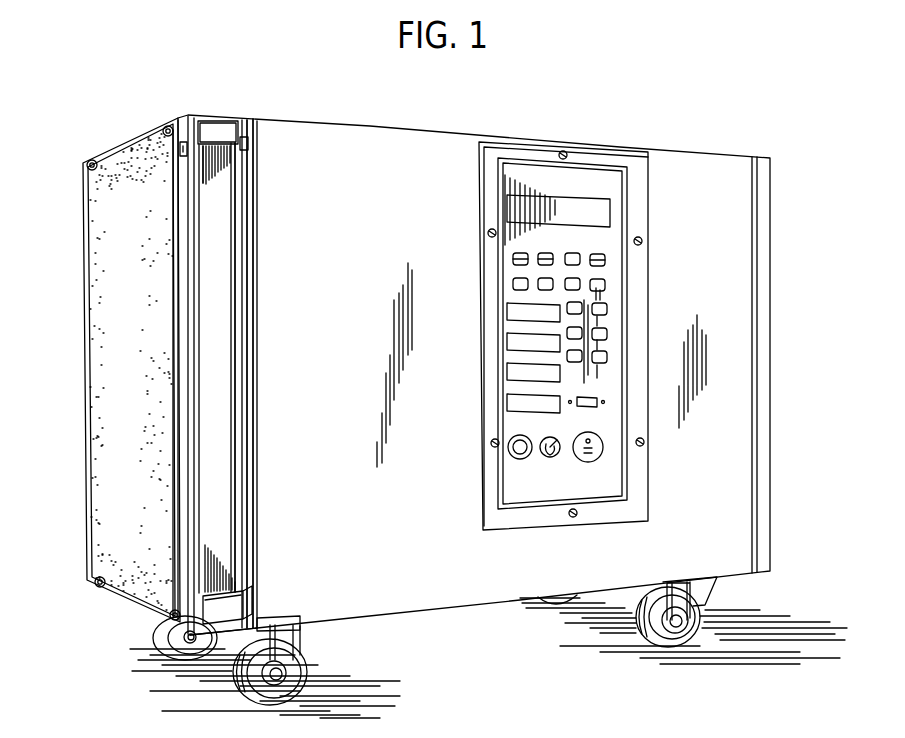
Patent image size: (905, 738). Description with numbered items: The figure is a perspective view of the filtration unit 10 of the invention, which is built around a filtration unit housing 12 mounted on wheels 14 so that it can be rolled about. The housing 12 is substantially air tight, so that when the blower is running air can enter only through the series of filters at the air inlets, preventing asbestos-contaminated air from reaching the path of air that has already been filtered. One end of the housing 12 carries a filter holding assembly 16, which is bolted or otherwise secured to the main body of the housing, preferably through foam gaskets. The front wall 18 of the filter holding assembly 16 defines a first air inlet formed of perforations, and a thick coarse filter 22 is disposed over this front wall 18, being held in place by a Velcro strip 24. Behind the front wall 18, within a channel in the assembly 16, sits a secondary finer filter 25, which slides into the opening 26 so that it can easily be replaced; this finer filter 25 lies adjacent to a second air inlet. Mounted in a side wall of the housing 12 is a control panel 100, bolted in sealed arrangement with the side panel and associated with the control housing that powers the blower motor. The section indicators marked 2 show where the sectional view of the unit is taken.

The filtration unit 10 is at (560, 116).
The filtration unit housing 12 is at (679, 150).
The wheels 14 is at (222, 696).
The filter holding assembly 16 is at (156, 111).
The front wall 18 is at (180, 118).
The thick coarse filter 22 is at (100, 347).
The Velcro strip 24 is at (188, 145).
The secondary finer filter 25 is at (215, 232).
The opening 26 is at (252, 540).
The control panel 100 is at (468, 273).
The section line 2- 2 is at (167, 145).